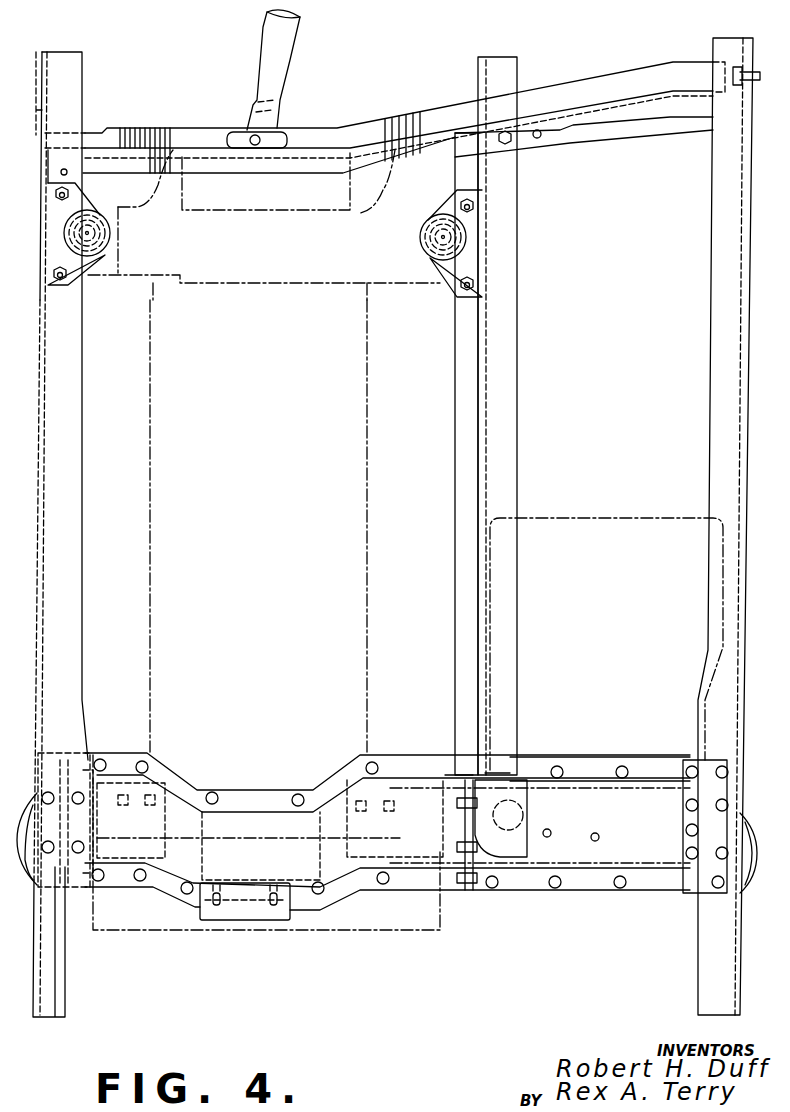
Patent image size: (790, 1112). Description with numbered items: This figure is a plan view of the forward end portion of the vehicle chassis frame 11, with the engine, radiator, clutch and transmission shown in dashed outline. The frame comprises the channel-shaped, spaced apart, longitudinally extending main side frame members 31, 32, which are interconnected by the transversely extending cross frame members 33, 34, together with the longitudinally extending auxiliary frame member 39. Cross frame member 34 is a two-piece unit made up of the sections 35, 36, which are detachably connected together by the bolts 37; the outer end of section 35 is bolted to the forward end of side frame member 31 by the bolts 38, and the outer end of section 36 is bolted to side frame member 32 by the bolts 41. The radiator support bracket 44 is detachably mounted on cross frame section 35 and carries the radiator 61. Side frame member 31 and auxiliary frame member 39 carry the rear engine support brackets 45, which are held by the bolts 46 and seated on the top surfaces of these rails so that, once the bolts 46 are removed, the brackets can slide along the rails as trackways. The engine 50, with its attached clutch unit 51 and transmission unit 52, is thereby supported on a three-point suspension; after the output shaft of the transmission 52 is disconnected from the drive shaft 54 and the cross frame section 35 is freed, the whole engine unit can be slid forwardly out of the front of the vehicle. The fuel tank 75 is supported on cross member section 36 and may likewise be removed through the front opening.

The chassis frame 11 is at (619, 73).
The main side frame member 31 is at (57, 663).
The main side frame member 32 is at (715, 590).
The cross frame member 33 is at (407, 117).
The cross frame member 34 is at (582, 900).
The cross frame section 35 is at (410, 740).
The cross frame section 36 is at (603, 762).
The bolts 37 is at (498, 865).
The bolts 38 is at (88, 893).
The auxiliary frame member 39 is at (500, 468).
The bolts 41 is at (722, 800).
The radiator support bracket 44 is at (240, 895).
The rear engine support brackets 45 is at (78, 193).
The bolts 46 is at (75, 290).
The engine 50 is at (178, 518).
The clutch unit 51 is at (392, 262).
The transmission unit 52 is at (395, 178).
The drive shaft 54 is at (297, 72).
The radiator 61 is at (175, 930).
The fuel tank 75 is at (628, 525).